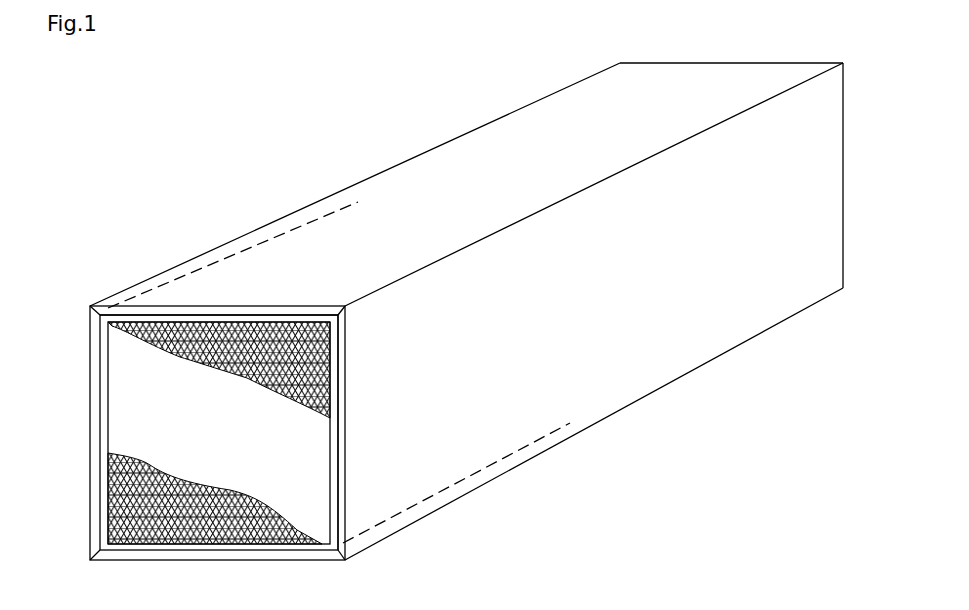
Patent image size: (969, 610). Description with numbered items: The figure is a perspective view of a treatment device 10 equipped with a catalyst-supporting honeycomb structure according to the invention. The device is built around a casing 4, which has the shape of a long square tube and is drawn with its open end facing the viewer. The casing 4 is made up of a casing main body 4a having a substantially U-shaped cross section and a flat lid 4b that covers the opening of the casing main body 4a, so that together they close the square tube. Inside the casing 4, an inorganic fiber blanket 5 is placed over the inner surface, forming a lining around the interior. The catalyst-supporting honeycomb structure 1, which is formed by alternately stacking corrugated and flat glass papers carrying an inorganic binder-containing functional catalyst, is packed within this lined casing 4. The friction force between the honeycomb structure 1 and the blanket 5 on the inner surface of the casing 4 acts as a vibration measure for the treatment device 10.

The treatment device equipped with catalyst-supporting honeycomb structure 10 is at (446, 336).
The catalyst-supporting honeycomb structure 1 is at (225, 447).
The casing 4 is at (600, 398).
The casing main body 4a is at (340, 507).
The lid 4b is at (190, 310).
The blanket 5 is at (118, 317).